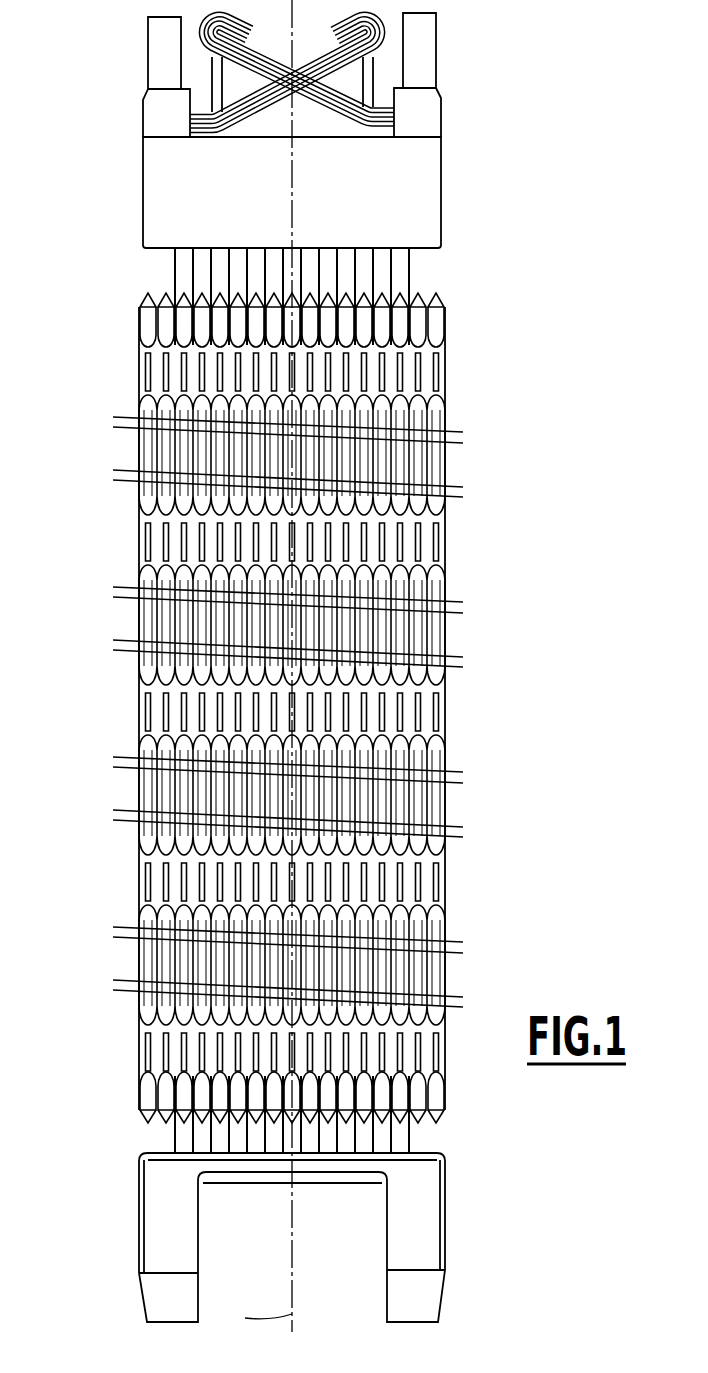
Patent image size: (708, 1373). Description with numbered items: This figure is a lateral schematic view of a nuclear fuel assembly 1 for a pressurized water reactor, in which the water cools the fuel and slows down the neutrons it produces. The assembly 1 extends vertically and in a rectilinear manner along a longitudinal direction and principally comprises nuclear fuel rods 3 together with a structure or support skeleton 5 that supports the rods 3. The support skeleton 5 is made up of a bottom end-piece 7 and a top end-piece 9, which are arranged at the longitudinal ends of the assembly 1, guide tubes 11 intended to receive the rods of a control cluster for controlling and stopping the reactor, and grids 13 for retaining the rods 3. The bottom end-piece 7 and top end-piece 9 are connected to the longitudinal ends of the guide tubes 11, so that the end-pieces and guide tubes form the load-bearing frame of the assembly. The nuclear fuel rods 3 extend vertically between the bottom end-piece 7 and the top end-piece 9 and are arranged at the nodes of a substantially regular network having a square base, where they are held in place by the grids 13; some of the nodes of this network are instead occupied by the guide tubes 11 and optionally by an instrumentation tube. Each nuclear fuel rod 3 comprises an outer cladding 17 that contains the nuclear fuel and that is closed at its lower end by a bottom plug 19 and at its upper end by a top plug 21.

The nuclear fuel assembly 1 is at (324, 666).
The nuclear fuel rods 3 is at (427, 330).
The support skeleton 5 is at (344, 130).
The bottom end-piece 7 is at (418, 1236).
The top end-piece 9 is at (425, 180).
The guide tubes 11 is at (212, 284).
The grids 13 is at (138, 378).
The outer cladding 17 is at (165, 461).
The bottom plug 19 is at (143, 1118).
The top plug 21 is at (140, 301).